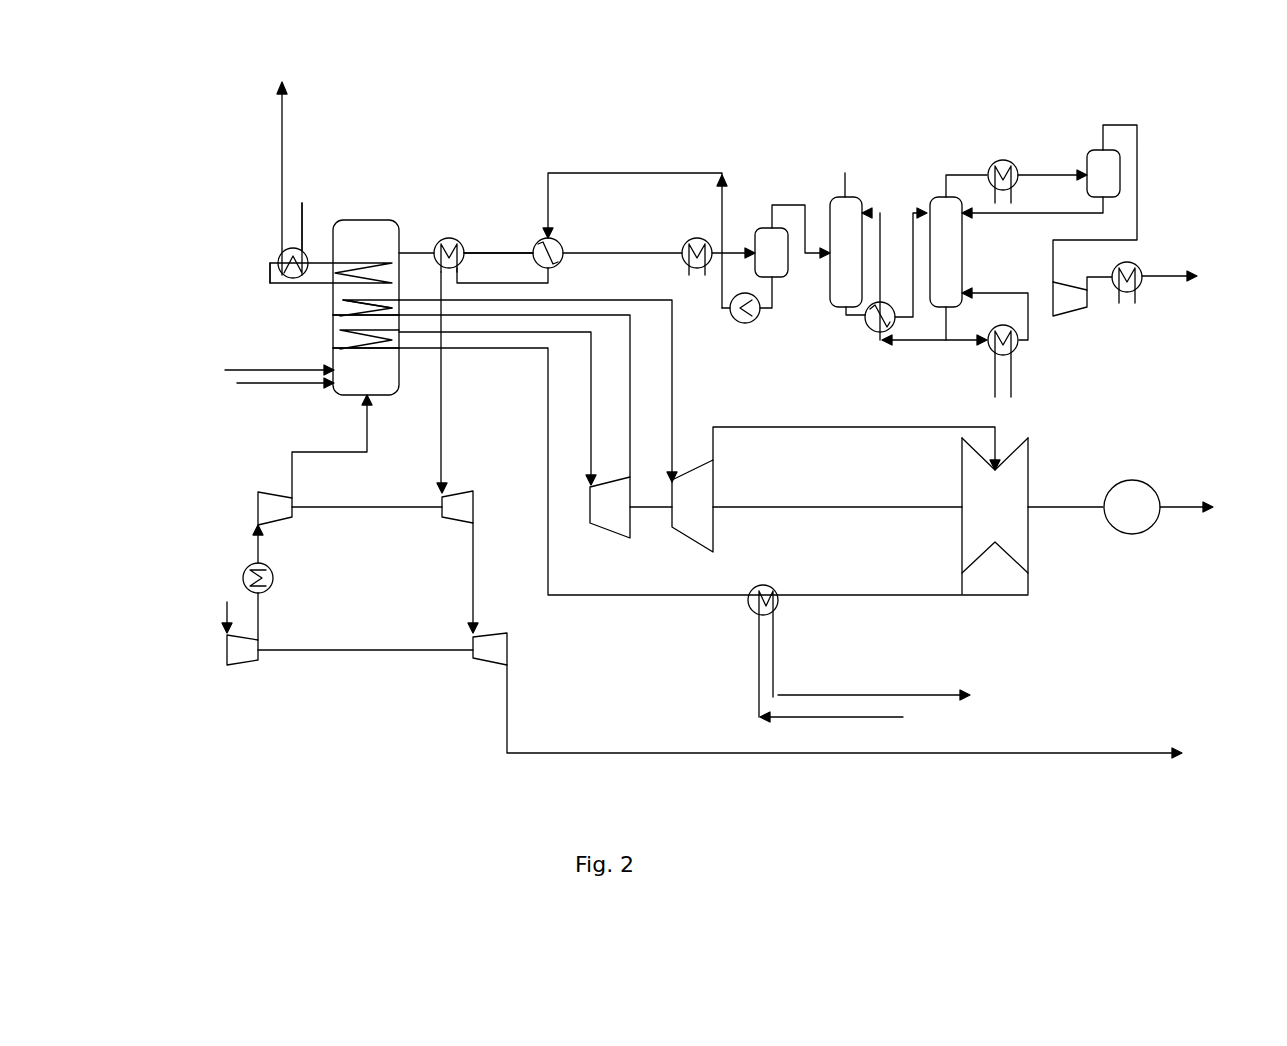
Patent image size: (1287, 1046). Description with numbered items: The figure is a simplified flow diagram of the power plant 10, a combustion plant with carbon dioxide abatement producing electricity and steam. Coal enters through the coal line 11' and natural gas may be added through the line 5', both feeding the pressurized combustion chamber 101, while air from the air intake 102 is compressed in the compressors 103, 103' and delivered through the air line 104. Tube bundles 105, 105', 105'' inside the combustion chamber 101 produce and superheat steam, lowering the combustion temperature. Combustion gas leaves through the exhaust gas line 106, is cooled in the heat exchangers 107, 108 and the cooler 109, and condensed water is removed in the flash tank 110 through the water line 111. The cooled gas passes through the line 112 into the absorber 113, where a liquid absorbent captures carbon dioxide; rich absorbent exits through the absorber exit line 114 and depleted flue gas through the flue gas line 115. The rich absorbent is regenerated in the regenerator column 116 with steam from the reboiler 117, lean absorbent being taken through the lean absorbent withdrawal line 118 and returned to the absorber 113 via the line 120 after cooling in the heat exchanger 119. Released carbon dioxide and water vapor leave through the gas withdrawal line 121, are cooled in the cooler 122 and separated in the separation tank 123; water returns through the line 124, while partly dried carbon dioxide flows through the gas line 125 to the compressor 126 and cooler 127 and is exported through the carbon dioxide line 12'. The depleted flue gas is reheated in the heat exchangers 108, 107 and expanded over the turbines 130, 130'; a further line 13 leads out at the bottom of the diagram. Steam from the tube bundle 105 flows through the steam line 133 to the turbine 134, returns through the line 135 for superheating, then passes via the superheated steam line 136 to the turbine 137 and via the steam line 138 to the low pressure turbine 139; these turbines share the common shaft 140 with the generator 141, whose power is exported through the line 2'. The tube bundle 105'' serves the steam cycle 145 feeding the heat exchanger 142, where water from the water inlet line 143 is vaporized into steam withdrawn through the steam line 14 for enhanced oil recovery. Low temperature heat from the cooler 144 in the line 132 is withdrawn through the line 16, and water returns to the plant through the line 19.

The electrical power export line 2' is at (1186, 478).
The natural gas line 5' is at (243, 439).
The power plant 10 is at (215, 207).
The coal line 11' is at (222, 398).
The CO2 line 12' is at (1177, 239).
The exhaust stream 13 is at (1147, 752).
The steam line 14 is at (278, 118).
The heat withdrawal line 16 is at (903, 685).
The water return line 19 is at (880, 717).
The pressurized combustion chamber 101 is at (390, 256).
The air intake 102 is at (213, 618).
The compressor 103 is at (348, 624).
The compressor 103' is at (350, 535).
The air line 104 is at (358, 427).
The tube bundle 105 is at (254, 342).
The tube bundle 105' is at (253, 294).
The tube bundle 105'' is at (250, 269).
The exhaust gas line 106 is at (481, 252).
The heat exchanger 107 is at (448, 238).
The heat exchanger 108 is at (543, 238).
The cooler 109 is at (682, 247).
The flash tank 110 is at (782, 260).
The water line 111 is at (727, 205).
The cooled exhaust gas line 112 is at (792, 207).
The absorber 113 is at (848, 217).
The absorber exit line 114 is at (863, 325).
The flue gas line 115 is at (615, 173).
The regenerator column 116 is at (948, 217).
The reboiler 117 is at (1017, 348).
The lean absorbent withdrawal line 118 is at (967, 345).
The heat exchanger 119 is at (875, 330).
The lean absorbent line 120 is at (893, 343).
The gas withdrawal line 121 is at (957, 172).
The cooler 122 is at (1013, 167).
The separation tank 123 is at (1103, 160).
The water line 124 is at (1025, 215).
The gas line 125 is at (1137, 148).
The compressor 126 is at (1070, 295).
The cooler 127 is at (1143, 280).
The turbine 130 is at (474, 397).
The turbine 130' is at (457, 619).
The line 132 is at (548, 573).
The steam line 133 is at (591, 345).
The turbine 134 is at (628, 521).
The expanded steam line 135 is at (625, 417).
The superheated steam line 136 is at (672, 325).
The turbine 137 is at (712, 521).
The steam line 138 is at (713, 437).
The low pressure turbine 139 is at (1006, 521).
The common shaft 140 is at (935, 507).
The generator 141 is at (1148, 521).
The heat exchanger 142 is at (280, 254).
The water inlet line 143 is at (303, 203).
The cooler 144 is at (775, 607).
The steam cycle 145 is at (270, 270).